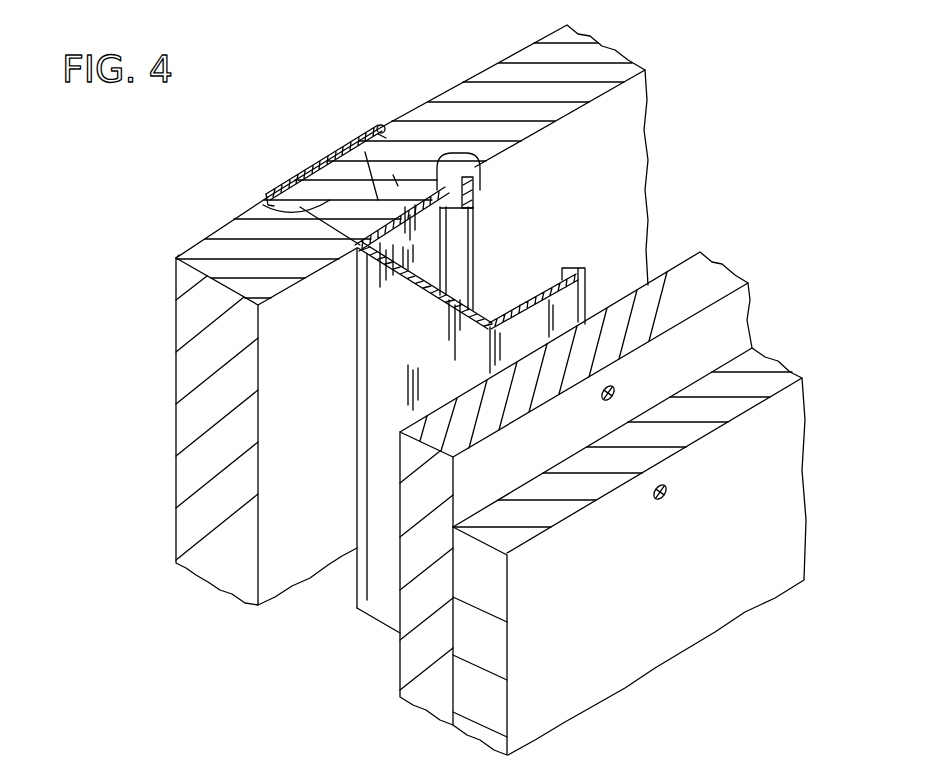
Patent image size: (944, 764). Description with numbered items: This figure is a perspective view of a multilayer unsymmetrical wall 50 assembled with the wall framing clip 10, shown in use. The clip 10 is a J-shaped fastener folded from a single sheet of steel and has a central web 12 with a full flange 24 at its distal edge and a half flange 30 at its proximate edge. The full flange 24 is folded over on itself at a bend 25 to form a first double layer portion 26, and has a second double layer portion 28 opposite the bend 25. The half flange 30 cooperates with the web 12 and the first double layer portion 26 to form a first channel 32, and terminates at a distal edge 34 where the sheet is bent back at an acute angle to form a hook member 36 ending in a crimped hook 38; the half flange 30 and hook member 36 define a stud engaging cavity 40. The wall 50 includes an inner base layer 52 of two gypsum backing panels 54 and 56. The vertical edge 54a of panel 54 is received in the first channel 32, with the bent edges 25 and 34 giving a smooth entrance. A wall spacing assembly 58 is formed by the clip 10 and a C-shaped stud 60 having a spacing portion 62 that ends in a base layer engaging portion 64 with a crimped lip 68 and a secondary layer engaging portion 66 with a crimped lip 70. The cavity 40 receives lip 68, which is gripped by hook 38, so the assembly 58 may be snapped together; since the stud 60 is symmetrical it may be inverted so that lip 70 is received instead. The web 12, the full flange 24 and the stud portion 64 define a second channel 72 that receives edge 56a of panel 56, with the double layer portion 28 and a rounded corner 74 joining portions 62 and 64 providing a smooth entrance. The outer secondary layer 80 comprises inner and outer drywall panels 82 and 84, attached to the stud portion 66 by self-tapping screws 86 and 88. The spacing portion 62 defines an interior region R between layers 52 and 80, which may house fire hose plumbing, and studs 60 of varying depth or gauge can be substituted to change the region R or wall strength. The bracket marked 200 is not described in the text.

The wall framing clip 10 is at (318, 134).
The web 12 is at (373, 187).
The full flange 24 is at (310, 158).
The bend 25 is at (383, 130).
The first double layer portion 26 is at (363, 167).
The second double layer portion 28 is at (270, 192).
The half flange 30 is at (447, 155).
The first channel 32 is at (367, 157).
The distal edge 34 is at (472, 177).
The hook member 36 is at (473, 202).
The hook 38 is at (458, 270).
The stud engaging cavity 40 is at (477, 186).
The multilayer wall 50 is at (123, 235).
The inner base layer 52 is at (625, 107).
The backing panel 54 is at (528, 58).
The vertical edge 54a is at (393, 175).
The backing panel 56 is at (240, 228).
The edge 56a is at (263, 205).
The wall spacing assembly 58 is at (543, 175).
The stud 60 is at (388, 385).
The spacing portion 62 is at (403, 335).
The base layer engaging portion 64 is at (393, 248).
The secondary layer engaging portion 66 is at (537, 297).
The crimped lip portion 68 is at (450, 245).
The crimped lip portion 70 is at (582, 270).
The second channel 72 is at (193, 245).
The rounded corner 74 is at (357, 482).
The outer secondary layer 80 is at (445, 723).
The inner wall panel 82 is at (733, 323).
The outer wall panel 84 is at (773, 443).
The screw 86 is at (597, 398).
The screw 88 is at (653, 502).
The roof edge region 200 is at (540, 32).
The interior region R is at (612, 188).